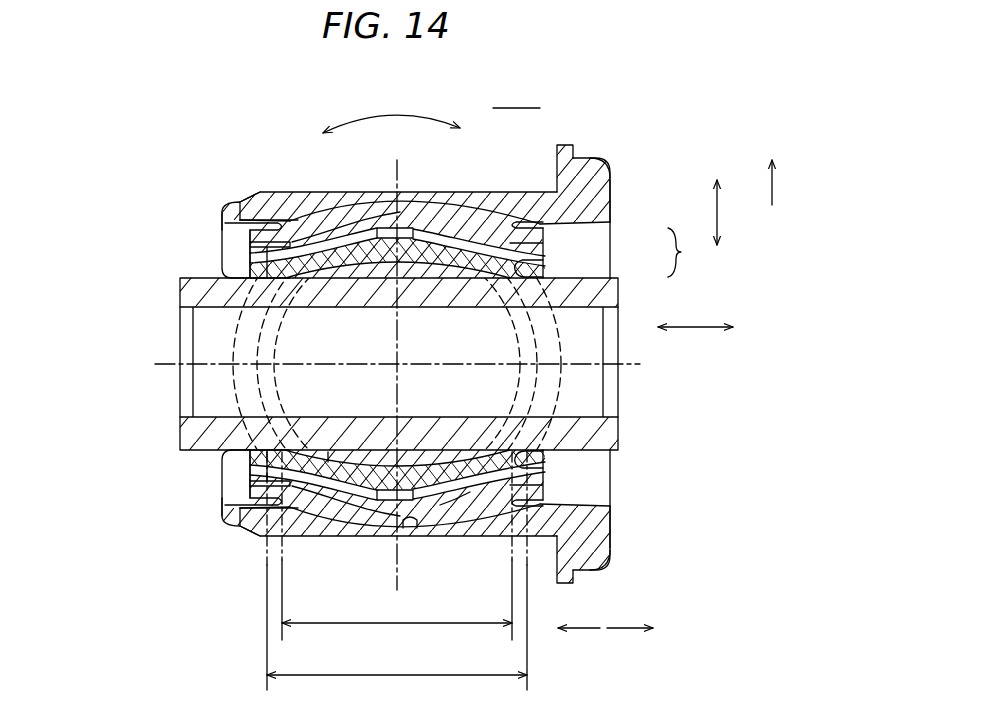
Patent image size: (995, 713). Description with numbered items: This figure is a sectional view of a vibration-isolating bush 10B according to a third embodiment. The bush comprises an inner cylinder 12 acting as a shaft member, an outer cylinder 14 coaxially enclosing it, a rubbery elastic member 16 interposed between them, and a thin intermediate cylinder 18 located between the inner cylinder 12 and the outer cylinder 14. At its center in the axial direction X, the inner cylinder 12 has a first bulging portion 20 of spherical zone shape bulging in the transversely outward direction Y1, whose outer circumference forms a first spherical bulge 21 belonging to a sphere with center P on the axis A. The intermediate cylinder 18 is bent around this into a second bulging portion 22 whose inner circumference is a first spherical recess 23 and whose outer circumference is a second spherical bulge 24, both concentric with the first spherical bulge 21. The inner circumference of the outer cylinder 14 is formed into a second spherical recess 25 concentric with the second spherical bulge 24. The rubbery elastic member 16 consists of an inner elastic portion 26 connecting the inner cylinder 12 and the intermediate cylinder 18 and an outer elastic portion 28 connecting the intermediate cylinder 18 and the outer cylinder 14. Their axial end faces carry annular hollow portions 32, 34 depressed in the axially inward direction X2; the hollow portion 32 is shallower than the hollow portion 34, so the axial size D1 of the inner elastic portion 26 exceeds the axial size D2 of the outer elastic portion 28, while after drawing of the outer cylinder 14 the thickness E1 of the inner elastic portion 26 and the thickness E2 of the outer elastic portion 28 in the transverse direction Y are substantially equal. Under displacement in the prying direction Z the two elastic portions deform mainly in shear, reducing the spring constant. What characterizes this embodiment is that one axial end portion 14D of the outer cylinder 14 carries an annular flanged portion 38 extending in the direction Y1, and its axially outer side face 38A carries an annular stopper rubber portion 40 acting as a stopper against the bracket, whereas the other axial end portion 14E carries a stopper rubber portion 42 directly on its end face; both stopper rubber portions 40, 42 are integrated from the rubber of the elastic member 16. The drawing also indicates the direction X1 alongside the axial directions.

The vibration-isolating bush 10B is at (519, 95).
The inner cylinder 12 is at (620, 440).
The outer cylinder 14 is at (472, 203).
The axial end portion 14D is at (550, 185).
The axial end portion 14E is at (240, 202).
The rubbery elastic member 16 is at (612, 364).
The intermediate cylinder 18 is at (250, 252).
The first bulging portion 20 is at (383, 273).
The first spherical bulge 21 is at (412, 462).
The second bulging portion 22 is at (415, 226).
The first spherical recess 23 is at (445, 475).
The second spherical bulge 24 is at (455, 515).
The second spherical recess 25 is at (406, 530).
The inner elastic portion 26 is at (545, 268).
The outer elastic portion 28 is at (545, 238).
The hollow portion 32 is at (250, 266).
The hollow portion 34 is at (263, 222).
The flanged portion 38 is at (567, 142).
The axially outer side face 38A is at (612, 170).
The stopper rubber portion 40 is at (612, 202).
The stopper rubber portion 42 is at (222, 212).
The center P is at (402, 360).
The axis A is at (622, 364).
The thickness E1 is at (330, 455).
The thickness E2 is at (310, 530).
The axial size D1 is at (397, 571).
The axial size D2 is at (397, 546).
The axial direction X is at (695, 312).
The axial direction X1 is at (630, 612).
The axially inward direction X2 is at (579, 612).
The transverse direction Y is at (728, 212).
The transversely outward direction Y1 is at (792, 184).
The prying direction Z is at (391, 109).